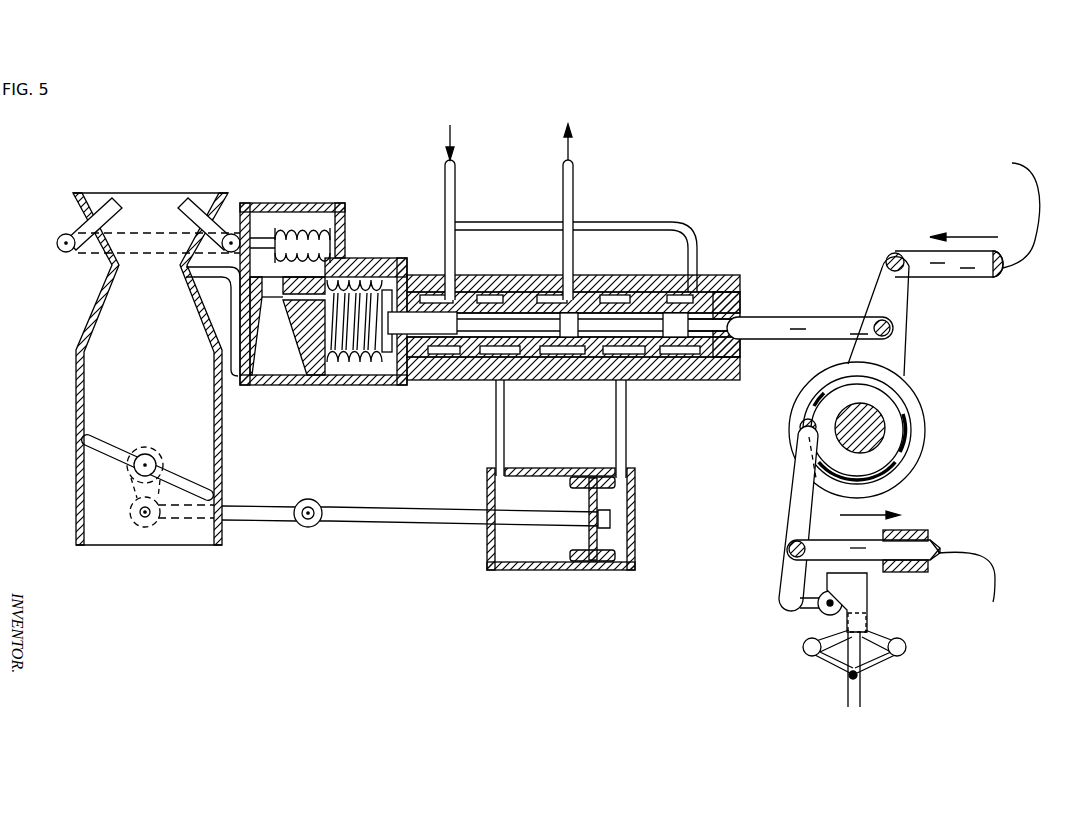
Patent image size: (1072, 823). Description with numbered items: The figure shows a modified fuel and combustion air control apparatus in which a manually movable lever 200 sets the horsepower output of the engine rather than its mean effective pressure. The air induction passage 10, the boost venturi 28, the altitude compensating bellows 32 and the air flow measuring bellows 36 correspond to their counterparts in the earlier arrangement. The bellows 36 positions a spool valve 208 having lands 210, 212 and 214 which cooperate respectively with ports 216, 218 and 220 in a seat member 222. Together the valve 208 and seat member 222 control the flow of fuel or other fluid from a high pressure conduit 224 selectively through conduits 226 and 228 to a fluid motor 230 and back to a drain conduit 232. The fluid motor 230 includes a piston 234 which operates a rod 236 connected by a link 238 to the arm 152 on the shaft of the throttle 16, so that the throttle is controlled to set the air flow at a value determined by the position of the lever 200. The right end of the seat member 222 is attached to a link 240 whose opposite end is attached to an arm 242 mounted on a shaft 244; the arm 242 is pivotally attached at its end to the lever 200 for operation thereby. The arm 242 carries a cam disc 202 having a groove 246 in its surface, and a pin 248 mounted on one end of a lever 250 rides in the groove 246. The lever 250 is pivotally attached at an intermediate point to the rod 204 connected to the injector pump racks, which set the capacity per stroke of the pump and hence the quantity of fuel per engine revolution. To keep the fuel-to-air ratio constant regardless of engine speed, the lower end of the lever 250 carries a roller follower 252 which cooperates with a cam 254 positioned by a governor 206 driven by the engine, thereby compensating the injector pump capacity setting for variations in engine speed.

The air induction passage 10 is at (77, 345).
The throttle 16 is at (122, 418).
The arm 152 is at (126, 491).
The boost venturi 28 is at (272, 325).
The altitude compensating bellows 32 is at (291, 230).
The air flow measuring bellows 36 is at (360, 374).
The manually movable lever 200 is at (973, 278).
The cam disc 202 is at (926, 445).
The rod 204 is at (943, 559).
The governor 206 is at (916, 658).
The spool valve 208 is at (428, 334).
The land 210 is at (466, 294).
The land 212 is at (568, 297).
The land 214 is at (652, 293).
The port 216 is at (467, 353).
The port 218 is at (563, 339).
The port 220 is at (666, 348).
The seat member 222 is at (748, 348).
The high pressure conduit 224 is at (452, 197).
The conduit 226 is at (622, 414).
The conduit 228 is at (497, 407).
The fluid motor 230 is at (556, 588).
The drain conduit 232 is at (573, 187).
The piston 234 is at (600, 500).
The rod 236 is at (398, 519).
The link 238 is at (270, 516).
The link 240 is at (823, 322).
The arm 242 is at (897, 307).
The shaft 244 is at (876, 428).
The groove 246 is at (817, 398).
The pin 248 is at (800, 430).
The lever 250 is at (797, 493).
The roller follower 252 is at (822, 613).
The cam 254 is at (868, 597).